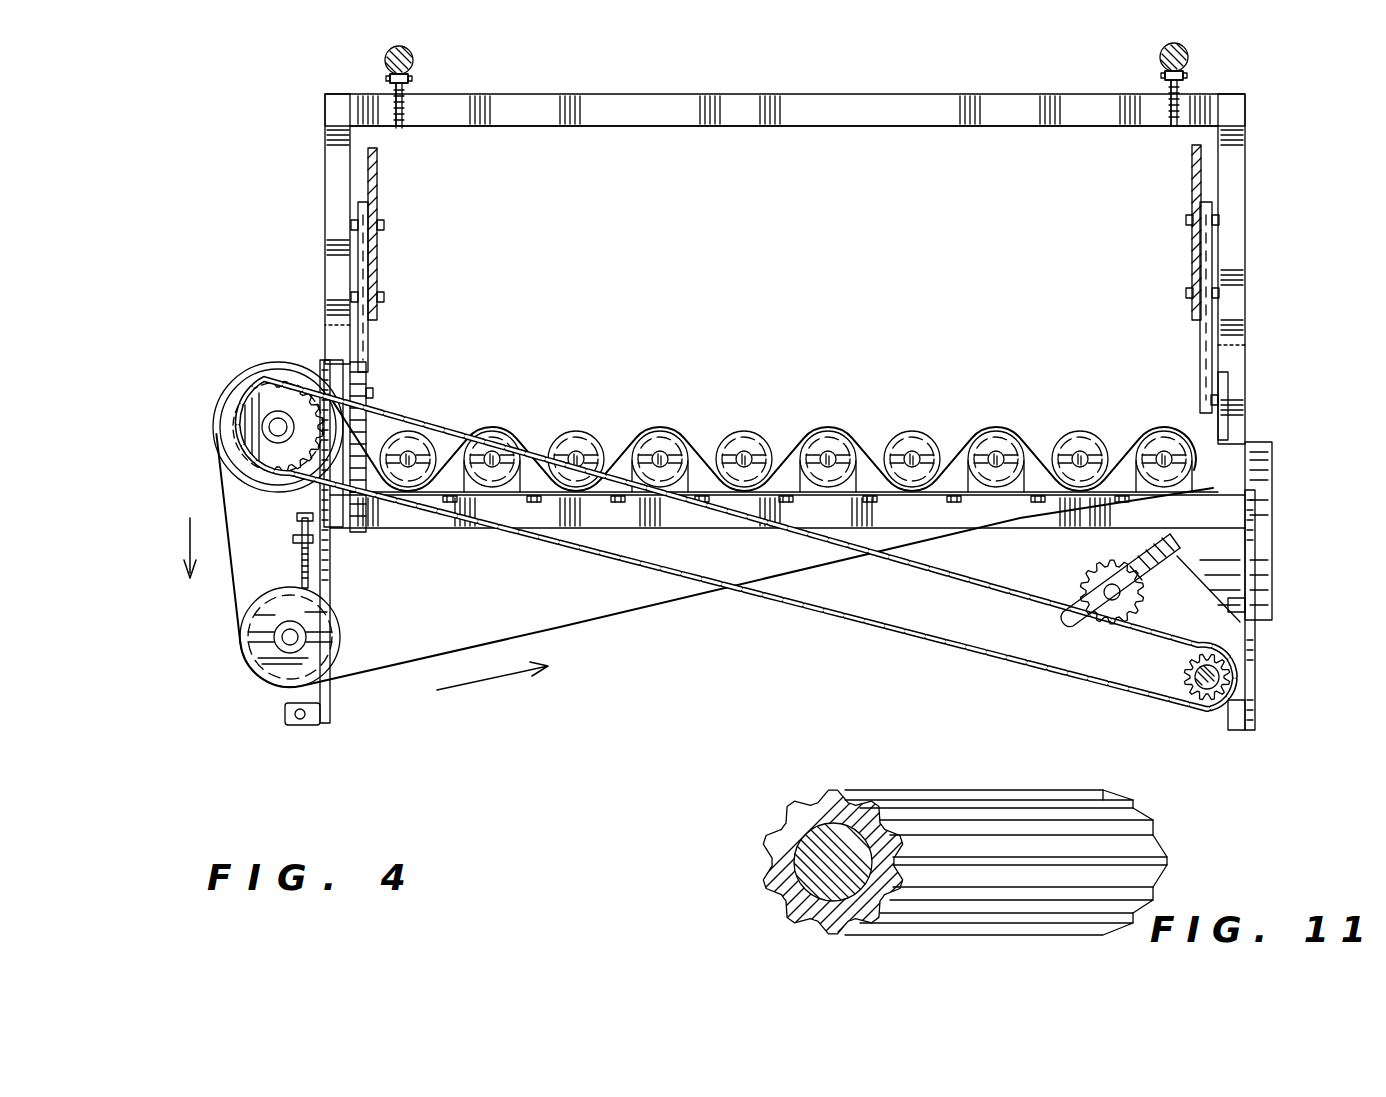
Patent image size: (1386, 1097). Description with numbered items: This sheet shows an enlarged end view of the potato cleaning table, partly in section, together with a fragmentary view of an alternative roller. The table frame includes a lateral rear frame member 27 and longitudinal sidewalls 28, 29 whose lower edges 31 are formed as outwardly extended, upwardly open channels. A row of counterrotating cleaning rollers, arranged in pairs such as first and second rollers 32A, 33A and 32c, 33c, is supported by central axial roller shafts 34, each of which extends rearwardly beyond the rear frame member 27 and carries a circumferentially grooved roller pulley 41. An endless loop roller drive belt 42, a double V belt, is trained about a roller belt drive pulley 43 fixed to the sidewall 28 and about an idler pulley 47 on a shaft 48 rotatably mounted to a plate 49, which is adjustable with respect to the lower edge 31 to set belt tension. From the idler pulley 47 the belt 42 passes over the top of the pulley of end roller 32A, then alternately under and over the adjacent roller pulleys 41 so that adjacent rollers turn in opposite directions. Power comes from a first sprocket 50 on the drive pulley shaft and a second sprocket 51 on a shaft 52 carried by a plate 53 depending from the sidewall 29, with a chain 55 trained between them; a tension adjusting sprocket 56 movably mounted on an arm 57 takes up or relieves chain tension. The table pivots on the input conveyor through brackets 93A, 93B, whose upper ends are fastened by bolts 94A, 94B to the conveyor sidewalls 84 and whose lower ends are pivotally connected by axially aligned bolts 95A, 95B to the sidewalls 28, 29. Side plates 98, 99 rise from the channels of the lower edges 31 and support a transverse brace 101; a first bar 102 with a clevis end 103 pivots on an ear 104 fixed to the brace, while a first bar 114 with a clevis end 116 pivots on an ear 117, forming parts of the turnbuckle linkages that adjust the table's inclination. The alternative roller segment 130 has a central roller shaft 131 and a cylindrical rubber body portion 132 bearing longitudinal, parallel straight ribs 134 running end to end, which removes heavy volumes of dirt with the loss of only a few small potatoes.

In FIG. 4, the lateral rear frame member 27 is at (635, 510).
In FIG. 4, the longitudinal sidewall 28 is at (350, 322).
In FIG. 4, the longitudinal sidewall 29 is at (1220, 350).
In FIG. 4, the lower edge 31 is at (337, 537).
In FIG. 4, the first roller 32A is at (1165, 414).
In FIG. 4, the first roller 32c is at (836, 416).
In FIG. 4, the second roller 33A is at (1070, 438).
In FIG. 4, the second roller 33c is at (757, 413).
In FIG. 4, the roller shaft 34 is at (906, 447).
In FIG. 4, the roller pulley 41 is at (995, 438).
In FIG. 4, the roller drive belt 42 is at (615, 623).
In FIG. 4, the roller belt drive pulley 43 is at (248, 476).
In FIG. 4, the idler pulley 47 is at (268, 676).
In FIG. 4, the shaft 48 is at (276, 640).
In FIG. 4, the plate 49 is at (327, 590).
In FIG. 4, the first sprocket 50 is at (250, 418).
In FIG. 4, the second sprocket 51 is at (1232, 702).
In FIG. 4, the shaft 52 is at (1230, 677).
In FIG. 4, the plate 53 is at (1258, 641).
In FIG. 4, the chain 55 is at (885, 640).
In FIG. 4, the tension adjusting sprocket 56 is at (1080, 592).
In FIG. 4, the arm 57 is at (1130, 556).
In FIG. 4, the sidewall of input conveyor 84 is at (378, 187).
In FIG. 4, the bracket 93A is at (360, 232).
In FIG. 4, the bracket 93B is at (1206, 263).
In FIG. 4, the bolts 94A is at (385, 222).
In FIG. 4, the bolts 94B is at (1216, 219).
In FIG. 4, the bolt 95A is at (372, 393).
In FIG. 4, the bolt 95B is at (1235, 398).
In FIG. 4, the first side plate 98 is at (325, 137).
In FIG. 4, the second side plate 99 is at (1232, 165).
In FIG. 4, the transverse brace 101 is at (815, 95).
In FIG. 4, the first bar 102 is at (413, 57).
In FIG. 4, the clevis end 103 is at (410, 78).
In FIG. 4, the ear 104 is at (405, 110).
In FIG. 4, the first bar 114 is at (1162, 53).
In FIG. 4, the clevis end 116 is at (1160, 77).
In FIG. 4, the ear 117 is at (1165, 112).
In FIG. 11, the roller segment 130 is at (952, 857).
In FIG. 11, the roller shaft 131 is at (818, 855).
In FIG. 11, the body portion 132 is at (797, 900).
In FIG. 11, the ribs 134 is at (1167, 887).